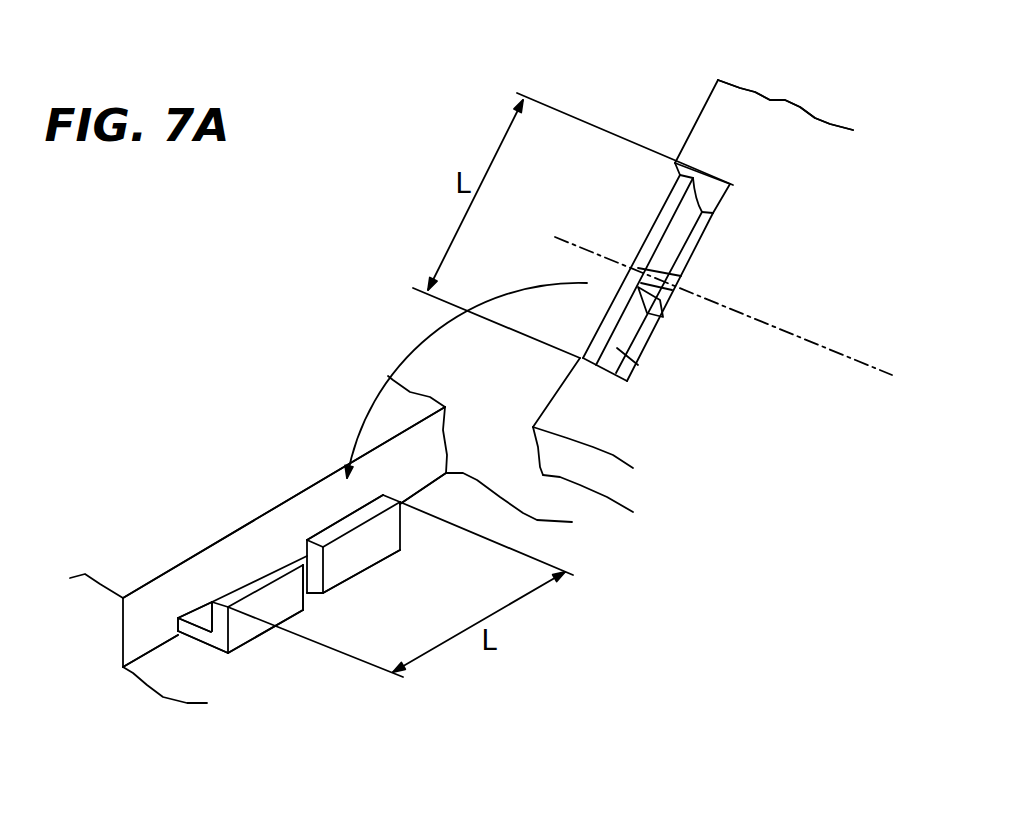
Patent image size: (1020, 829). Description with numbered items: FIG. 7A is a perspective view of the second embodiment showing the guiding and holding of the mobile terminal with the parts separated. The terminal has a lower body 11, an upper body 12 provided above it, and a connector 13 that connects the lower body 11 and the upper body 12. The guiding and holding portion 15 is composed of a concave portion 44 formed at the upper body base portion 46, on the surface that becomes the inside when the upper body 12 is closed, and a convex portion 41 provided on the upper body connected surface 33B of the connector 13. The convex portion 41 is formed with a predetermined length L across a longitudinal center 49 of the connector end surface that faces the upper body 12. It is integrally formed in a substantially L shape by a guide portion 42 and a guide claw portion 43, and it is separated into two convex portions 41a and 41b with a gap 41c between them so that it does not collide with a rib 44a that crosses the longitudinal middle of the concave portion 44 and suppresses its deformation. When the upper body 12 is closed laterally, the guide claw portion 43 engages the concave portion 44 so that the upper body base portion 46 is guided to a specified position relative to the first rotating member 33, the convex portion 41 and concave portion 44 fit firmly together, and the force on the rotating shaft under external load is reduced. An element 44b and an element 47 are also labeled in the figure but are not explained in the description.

The lower body 11 is at (553, 435).
The upper body 12 is at (735, 218).
The connector 13 is at (321, 483).
The guiding and holding portion 15 is at (315, 214).
The first rotating member 33 is at (284, 502).
The upper body connected surface 33B is at (284, 545).
The convex portion 41 is at (246, 661).
The convex portion 41a is at (240, 699).
The convex portion 41b is at (400, 586).
The gap 41c is at (333, 634).
The guide portion 42 is at (356, 561).
The guide claw portion 43 is at (381, 526).
The concave portion 44 is at (642, 271).
The rib 44a is at (692, 340).
The slot edge portion 44b is at (677, 391).
The upper body base portion 46 is at (785, 72).
The notch 47 is at (172, 677).
The longitudinal center 49 is at (723, 304).